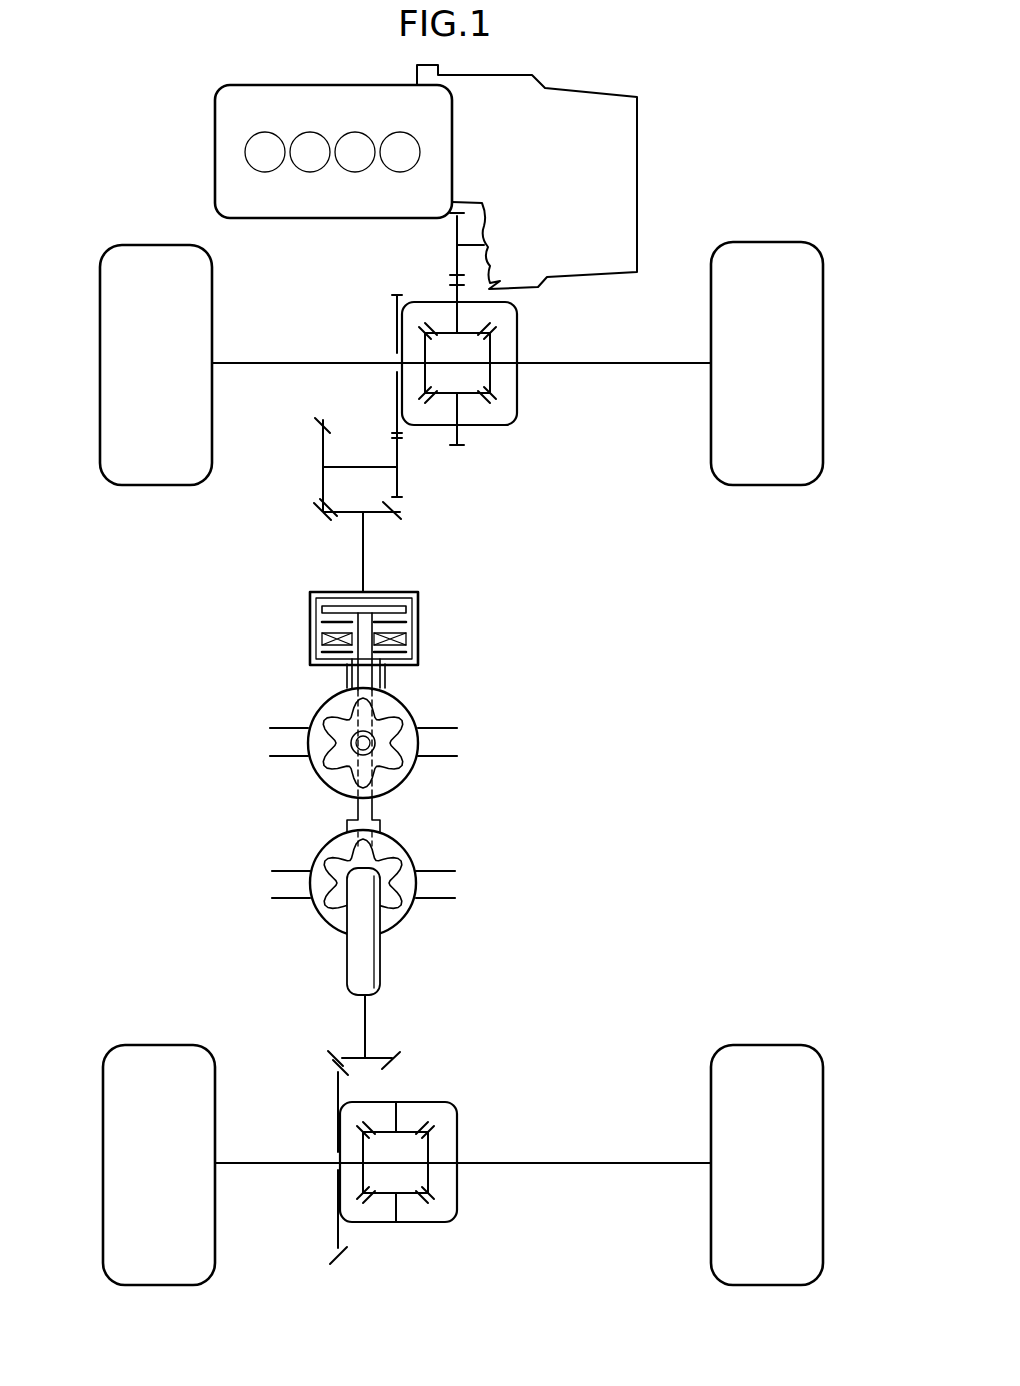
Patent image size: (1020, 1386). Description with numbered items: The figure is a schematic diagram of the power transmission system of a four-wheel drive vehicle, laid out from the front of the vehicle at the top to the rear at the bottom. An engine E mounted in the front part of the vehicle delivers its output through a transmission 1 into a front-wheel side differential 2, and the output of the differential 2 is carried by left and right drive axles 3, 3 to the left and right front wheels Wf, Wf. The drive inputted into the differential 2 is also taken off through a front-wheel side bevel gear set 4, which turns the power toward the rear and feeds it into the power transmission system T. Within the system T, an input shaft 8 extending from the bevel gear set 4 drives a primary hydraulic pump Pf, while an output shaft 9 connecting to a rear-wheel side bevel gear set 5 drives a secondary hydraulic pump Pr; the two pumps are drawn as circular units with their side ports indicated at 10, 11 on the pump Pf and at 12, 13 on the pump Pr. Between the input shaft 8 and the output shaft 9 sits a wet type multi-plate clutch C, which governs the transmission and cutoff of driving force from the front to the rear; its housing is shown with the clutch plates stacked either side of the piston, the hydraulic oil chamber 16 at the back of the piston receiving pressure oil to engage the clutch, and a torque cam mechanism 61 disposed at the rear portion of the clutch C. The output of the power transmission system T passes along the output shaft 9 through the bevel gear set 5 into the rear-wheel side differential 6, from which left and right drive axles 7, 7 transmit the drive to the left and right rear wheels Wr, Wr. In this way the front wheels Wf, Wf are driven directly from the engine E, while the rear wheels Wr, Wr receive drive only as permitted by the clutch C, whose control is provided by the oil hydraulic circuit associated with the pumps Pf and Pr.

The engine E is at (246, 79).
The transmission 1 is at (638, 128).
The front-wheel side differential 2 is at (518, 340).
The drive axles 3 is at (318, 362).
The bevel gear set 4 is at (293, 493).
The input shaft 8 is at (367, 556).
The multi-plate clutch C is at (414, 699).
The torque cam mechanism 61 is at (413, 642).
The hydraulic oil chamber 16 is at (402, 667).
The power transmission system T is at (310, 817).
The primary hydraulic pump Pf is at (291, 710).
The secondary hydraulic pump Pr is at (299, 916).
The front pulley shaft 10 is at (297, 757).
The front pulley shaft 11 is at (441, 757).
The rear pulley shaft 12 is at (291, 870).
The rear pulley shaft 13 is at (442, 870).
The output shaft 9 is at (368, 1031).
The bevel gear set 5 is at (311, 1057).
The rear-wheel side differential 6 is at (458, 1140).
The drive axles 7 is at (292, 1167).
The front wheels Wf is at (151, 245).
The rear wheels Wr is at (153, 1045).